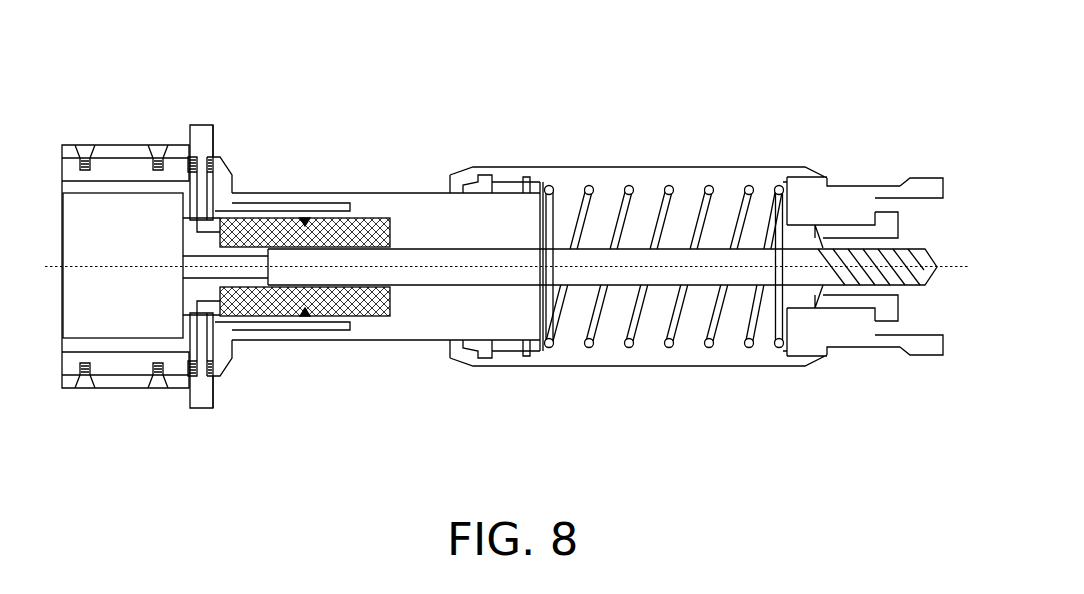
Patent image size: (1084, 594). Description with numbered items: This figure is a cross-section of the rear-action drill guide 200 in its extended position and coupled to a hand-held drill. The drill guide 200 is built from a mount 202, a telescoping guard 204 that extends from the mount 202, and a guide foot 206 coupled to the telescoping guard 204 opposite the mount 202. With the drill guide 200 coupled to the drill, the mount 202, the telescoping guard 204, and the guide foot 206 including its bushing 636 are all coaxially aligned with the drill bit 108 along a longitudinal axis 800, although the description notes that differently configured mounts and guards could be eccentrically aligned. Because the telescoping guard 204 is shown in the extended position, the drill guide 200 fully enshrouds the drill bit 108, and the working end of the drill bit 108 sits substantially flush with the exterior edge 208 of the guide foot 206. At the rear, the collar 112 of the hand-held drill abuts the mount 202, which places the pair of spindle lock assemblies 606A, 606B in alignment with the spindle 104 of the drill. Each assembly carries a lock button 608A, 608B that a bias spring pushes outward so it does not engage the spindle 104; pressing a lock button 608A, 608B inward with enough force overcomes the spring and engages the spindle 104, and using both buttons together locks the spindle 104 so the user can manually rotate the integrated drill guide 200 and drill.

The drill guide 200 is at (823, 108).
The mount 202 is at (128, 168).
The telescoping guard 204 is at (491, 400).
The guide foot 206 is at (870, 348).
The exterior edge 208 is at (943, 178).
The spindle 104 is at (213, 233).
The drill bit 108 is at (488, 260).
The collar 112 is at (142, 316).
The spindle lock assembly 606A is at (233, 101).
The spindle lock assembly 606B is at (222, 407).
The lock button 608A is at (215, 128).
The lock button 608B is at (215, 390).
The bushing 636 is at (883, 320).
The longitudinal axis 800 is at (952, 268).